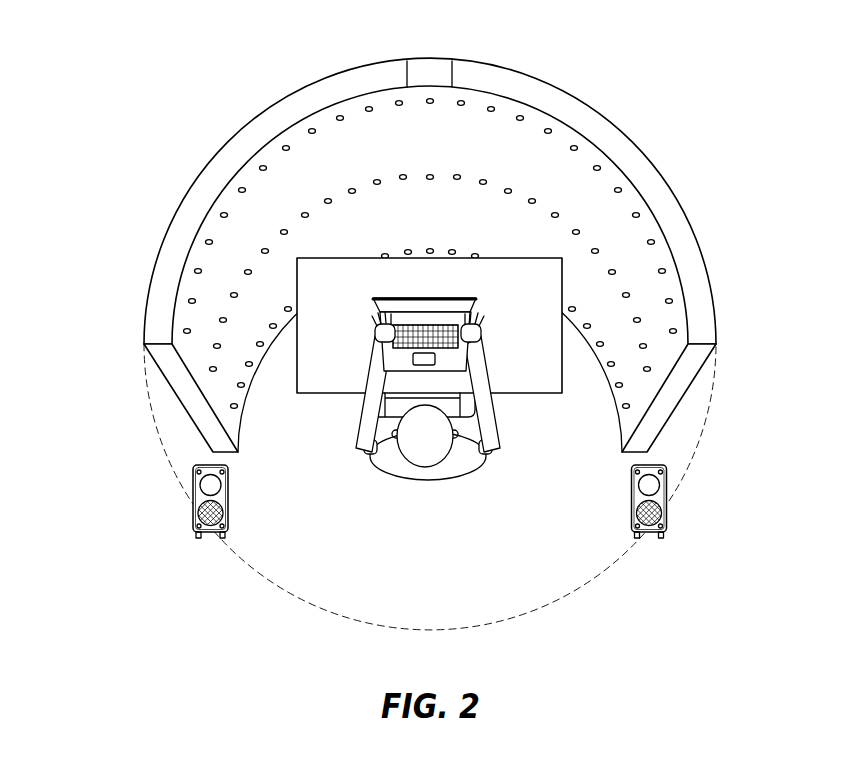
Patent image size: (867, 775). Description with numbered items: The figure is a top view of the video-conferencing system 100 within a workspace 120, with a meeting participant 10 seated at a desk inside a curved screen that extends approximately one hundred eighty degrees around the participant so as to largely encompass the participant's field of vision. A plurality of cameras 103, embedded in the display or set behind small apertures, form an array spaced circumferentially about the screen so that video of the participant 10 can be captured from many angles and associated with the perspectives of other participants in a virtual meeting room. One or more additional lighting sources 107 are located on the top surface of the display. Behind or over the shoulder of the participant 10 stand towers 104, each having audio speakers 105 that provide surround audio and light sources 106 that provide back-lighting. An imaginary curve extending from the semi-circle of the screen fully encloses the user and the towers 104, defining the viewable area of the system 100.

The video-conferencing system 100 is at (393, 240).
The additional lighting sources 107 is at (416, 56).
The workspace 120 is at (521, 164).
The cameras 103 is at (185, 298).
The meeting participant 10 is at (436, 470).
The towers 104 is at (657, 498).
The audio speakers 105 is at (652, 517).
The light sources 106 is at (632, 497).